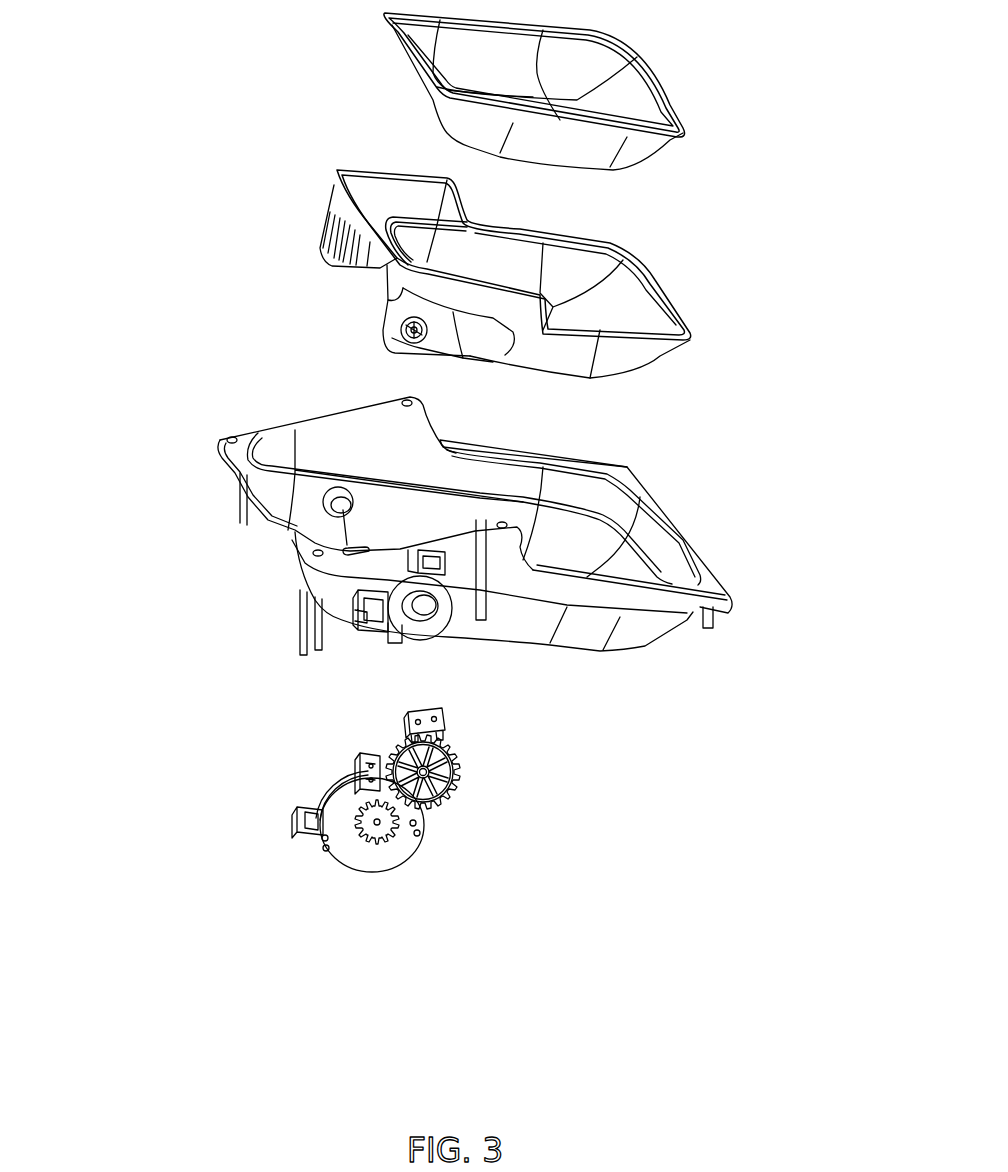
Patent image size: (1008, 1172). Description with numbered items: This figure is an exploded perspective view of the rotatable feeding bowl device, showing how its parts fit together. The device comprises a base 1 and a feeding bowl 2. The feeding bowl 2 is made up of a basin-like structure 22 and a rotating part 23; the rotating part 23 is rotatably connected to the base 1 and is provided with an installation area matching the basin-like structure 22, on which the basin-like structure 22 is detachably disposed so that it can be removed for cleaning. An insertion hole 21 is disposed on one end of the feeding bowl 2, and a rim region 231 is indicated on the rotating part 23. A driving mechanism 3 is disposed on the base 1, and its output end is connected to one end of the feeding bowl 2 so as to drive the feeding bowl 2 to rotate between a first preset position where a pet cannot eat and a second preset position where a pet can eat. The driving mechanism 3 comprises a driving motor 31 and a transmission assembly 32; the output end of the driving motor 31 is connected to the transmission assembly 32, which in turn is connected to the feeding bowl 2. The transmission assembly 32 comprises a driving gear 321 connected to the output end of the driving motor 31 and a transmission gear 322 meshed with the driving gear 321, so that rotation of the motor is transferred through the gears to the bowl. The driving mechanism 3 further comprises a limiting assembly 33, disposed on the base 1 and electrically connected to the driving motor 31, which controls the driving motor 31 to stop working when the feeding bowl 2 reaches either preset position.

The base 1 is at (240, 473).
The feeding bowl 2 is at (113, 218).
The insertion hole 21 is at (400, 331).
The basin-like structure 22 is at (405, 51).
The rotating part 23 is at (357, 201).
The tray rim 231 is at (622, 300).
The driving mechanism 3 is at (415, 1044).
The driving motor 31 is at (357, 853).
The transmission assembly 32 is at (445, 1006).
The driving gear 321 is at (377, 825).
The transmission gear 322 is at (423, 775).
The limiting assembly 33 is at (407, 716).